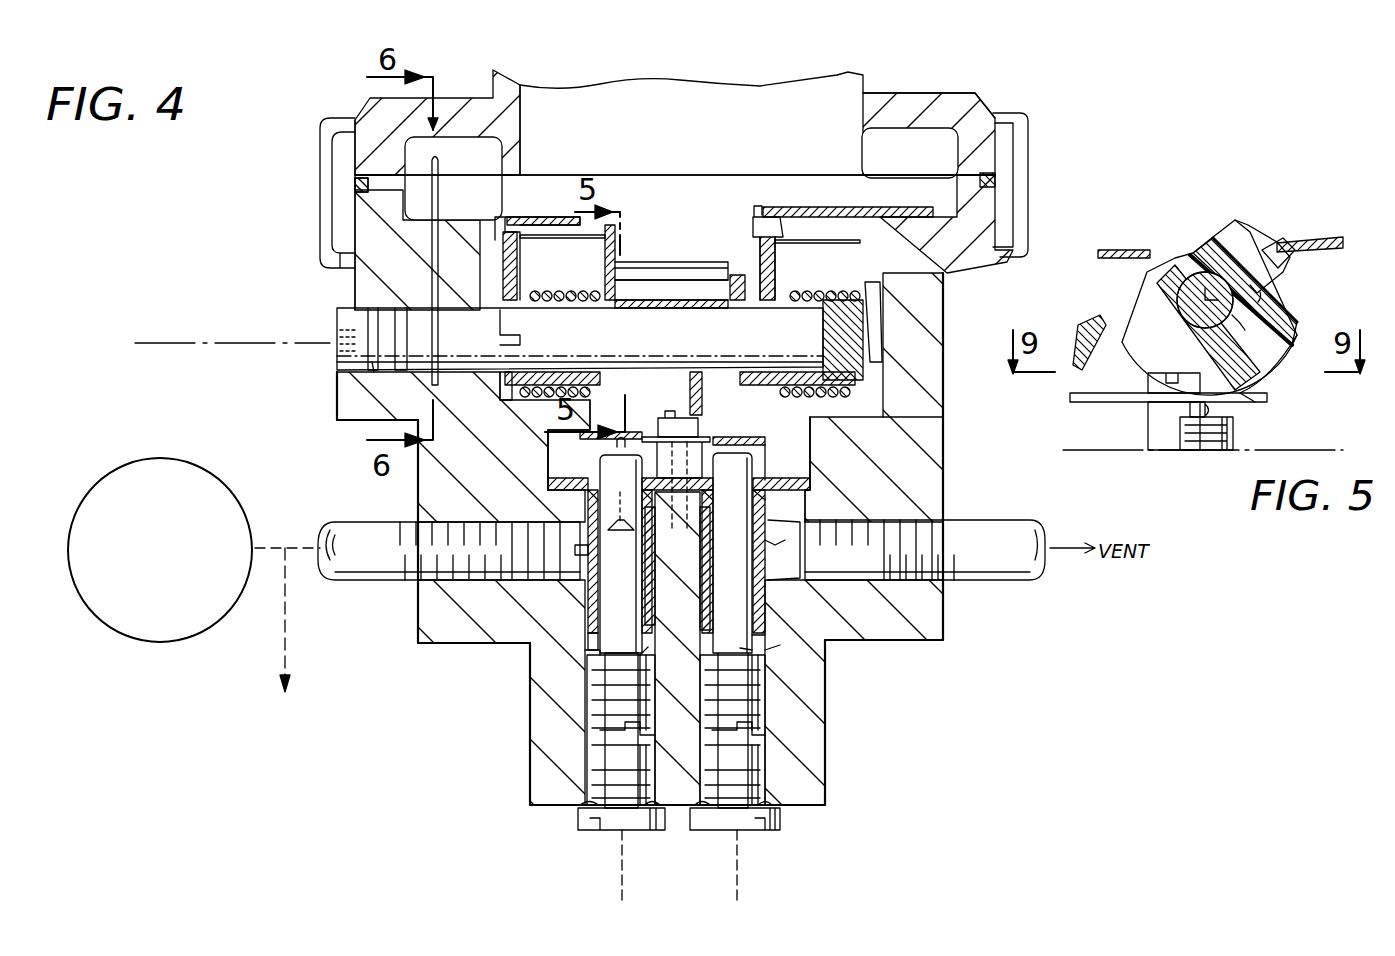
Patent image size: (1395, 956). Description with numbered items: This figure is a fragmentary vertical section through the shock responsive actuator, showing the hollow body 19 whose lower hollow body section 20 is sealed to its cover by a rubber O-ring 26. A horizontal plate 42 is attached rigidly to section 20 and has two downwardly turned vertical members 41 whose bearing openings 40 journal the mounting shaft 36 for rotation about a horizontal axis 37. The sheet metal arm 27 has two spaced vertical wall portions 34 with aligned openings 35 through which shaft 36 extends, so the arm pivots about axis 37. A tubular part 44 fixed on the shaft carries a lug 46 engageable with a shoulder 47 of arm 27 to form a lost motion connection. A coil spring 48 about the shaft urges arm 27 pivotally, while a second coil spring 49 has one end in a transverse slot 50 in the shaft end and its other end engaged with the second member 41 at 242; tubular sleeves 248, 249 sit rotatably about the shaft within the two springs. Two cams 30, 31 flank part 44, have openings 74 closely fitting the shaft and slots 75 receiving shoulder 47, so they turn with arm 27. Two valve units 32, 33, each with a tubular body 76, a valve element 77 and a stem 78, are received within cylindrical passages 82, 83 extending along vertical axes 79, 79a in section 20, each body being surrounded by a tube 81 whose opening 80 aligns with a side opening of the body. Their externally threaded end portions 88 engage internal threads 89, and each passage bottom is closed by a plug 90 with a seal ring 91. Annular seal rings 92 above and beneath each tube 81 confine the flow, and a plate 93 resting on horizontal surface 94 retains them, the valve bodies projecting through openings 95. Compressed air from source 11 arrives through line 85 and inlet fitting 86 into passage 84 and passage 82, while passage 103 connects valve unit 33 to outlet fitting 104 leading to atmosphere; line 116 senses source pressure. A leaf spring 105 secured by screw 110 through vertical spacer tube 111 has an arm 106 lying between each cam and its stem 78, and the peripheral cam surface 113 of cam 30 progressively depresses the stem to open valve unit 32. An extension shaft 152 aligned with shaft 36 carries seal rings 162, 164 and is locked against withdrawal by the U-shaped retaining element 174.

In FIG. 4, the source 11 is at (122, 462).
In FIG. 4, the hollow body 19 is at (648, 184).
In FIG. 4, the lower hollow body section 20 is at (352, 232).
In FIG. 4, the rubber O-ring 26 is at (355, 186).
In FIG. 5, the arm 27 is at (1125, 242).
In FIG. 4, the cam 30 is at (642, 280).
In FIG. 5, the cam 30 is at (1130, 332).
In FIG. 4, the cam 31 is at (740, 275).
In FIG. 4, the valve unit 32 is at (590, 652).
In FIG. 5, the valve unit 32 is at (1200, 455).
In FIG. 4, the valve unit 33 is at (770, 645).
In FIG. 4, the vertical wall portions 34 is at (600, 247).
In FIG. 4, the openings 35 is at (615, 302).
In FIG. 4, the mounting shaft 36 is at (580, 339).
In FIG. 5, the mounting shaft 36 is at (1190, 260).
In FIG. 4, the horizontal axis 37 is at (196, 345).
In FIG. 5, the horizontal axis 37 is at (1200, 304).
In FIG. 4, the bearing openings 40 is at (510, 372).
In FIG. 4, the vertical members 41 is at (505, 260).
In FIG. 4, the horizontal plate 42 is at (853, 210).
In FIG. 4, the tubular part 44 is at (680, 314).
In FIG. 5, the lug 46 is at (1292, 254).
In FIG. 5, the shoulder 47 is at (1258, 234).
In FIG. 4, the coil spring 48 is at (505, 397).
In FIG. 4, the second coil spring 49 is at (868, 420).
In FIG. 4, the transverse slot 50 is at (876, 342).
In FIG. 5, the openings 74 is at (1240, 320).
In FIG. 5, the slots 75 is at (1260, 292).
In FIG. 4, the tubular body 76 is at (748, 530).
In FIG. 5, the tubular body 76 is at (1213, 447).
In FIG. 4, the valve element 77 is at (621, 554).
In FIG. 4, the stem 78 is at (578, 437).
In FIG. 5, the stem 78 is at (1212, 412).
In FIG. 4, the axis 79 is at (598, 622).
In FIG. 4, the vertical axis 79a is at (740, 872).
In FIG. 4, the opening 80 is at (583, 562).
In FIG. 4, the tube 81 is at (590, 502).
In FIG. 4, the cylindrical passage 82 is at (593, 607).
In FIG. 4, the cylindrical passage 83 is at (765, 614).
In FIG. 4, the passage 84 is at (560, 512).
In FIG. 4, the line 85 is at (256, 548).
In FIG. 4, the inlet fitting 86 is at (360, 522).
In FIG. 4, the externally threaded end portions 88 is at (600, 712).
In FIG. 4, the internal threads 89 is at (645, 742).
In FIG. 4, the plug 90 is at (585, 832).
In FIG. 4, the seal ring 91 is at (585, 807).
In FIG. 4, the annular seal rings 92 is at (655, 512).
In FIG. 4, the plate 93 is at (773, 494).
In FIG. 4, the horizontal surface 94 is at (590, 480).
In FIG. 4, the openings 95 is at (810, 492).
In FIG. 4, the passage 103 is at (773, 554).
In FIG. 4, the outlet fitting 104 is at (998, 577).
In FIG. 4, the leaf spring 105 is at (812, 442).
In FIG. 5, the leaf spring 105 is at (1273, 399).
In FIG. 5, the arm 106 is at (1252, 403).
In FIG. 4, the screw 110 is at (672, 420).
In FIG. 5, the screw 110 is at (1150, 388).
In FIG. 4, the vertical spacer tube 111 is at (685, 397).
In FIG. 5, the vertical spacer tube 111 is at (1151, 432).
In FIG. 5, the peripheral cam surface 113 is at (1262, 374).
In FIG. 4, the line 116 is at (287, 632).
In FIG. 4, the extension shaft 152 is at (348, 324).
In FIG. 4, the annular seal ring 162 is at (400, 377).
In FIG. 4, the second seal ring 164 is at (370, 352).
In FIG. 4, the U-shaped retaining element 174 is at (440, 165).
In FIG. 4, the engagement location 242 is at (755, 214).
In FIG. 4, the tubular sleeve 248 is at (558, 282).
In FIG. 4, the tubular sleeve 249 is at (860, 298).